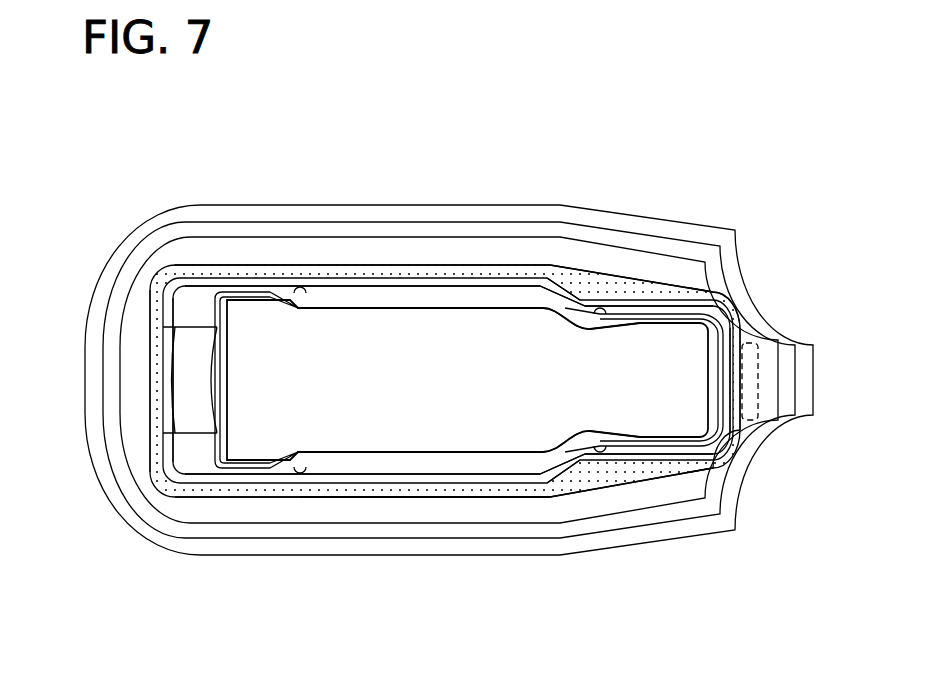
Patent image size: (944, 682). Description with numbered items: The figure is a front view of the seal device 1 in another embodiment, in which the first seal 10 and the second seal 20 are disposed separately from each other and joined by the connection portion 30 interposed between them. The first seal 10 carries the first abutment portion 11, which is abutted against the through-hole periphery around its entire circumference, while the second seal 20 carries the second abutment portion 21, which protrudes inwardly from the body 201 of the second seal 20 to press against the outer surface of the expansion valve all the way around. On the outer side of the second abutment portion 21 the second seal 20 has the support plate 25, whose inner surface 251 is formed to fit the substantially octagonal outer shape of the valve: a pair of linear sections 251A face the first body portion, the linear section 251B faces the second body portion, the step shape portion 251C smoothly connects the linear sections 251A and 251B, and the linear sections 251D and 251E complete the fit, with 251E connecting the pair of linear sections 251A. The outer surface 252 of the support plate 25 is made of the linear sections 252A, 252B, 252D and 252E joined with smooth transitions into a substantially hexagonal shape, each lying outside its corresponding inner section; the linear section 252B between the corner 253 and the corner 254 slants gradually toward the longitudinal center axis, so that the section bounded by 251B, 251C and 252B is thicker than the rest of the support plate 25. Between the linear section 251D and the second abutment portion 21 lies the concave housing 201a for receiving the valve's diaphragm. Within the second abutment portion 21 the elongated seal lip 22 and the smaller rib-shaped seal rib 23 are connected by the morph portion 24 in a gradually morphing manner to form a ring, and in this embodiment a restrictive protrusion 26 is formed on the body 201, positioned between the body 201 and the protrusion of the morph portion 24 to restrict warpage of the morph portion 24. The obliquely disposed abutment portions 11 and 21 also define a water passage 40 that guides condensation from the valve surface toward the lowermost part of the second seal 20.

The seal device 1 is at (103, 216).
The first seal 10 is at (470, 206).
The first abutment portion 11 is at (518, 232).
The second seal 20 is at (520, 288).
The second abutment portion 21 is at (217, 337).
The seal lip 22 is at (520, 465).
The seal rib 23 is at (700, 452).
The morph portion 24 is at (615, 443).
The support plate 25 is at (418, 492).
The restrictive protrusion 26 is at (600, 451).
The connection portion 30 is at (418, 238).
The water passage 40 is at (760, 378).
The body 201 is at (533, 282).
The concave housing 201a is at (193, 400).
The inner surface 251 is at (470, 480).
The linear section 251A is at (288, 283).
The linear section 251B is at (658, 300).
The step shape portion 251C is at (594, 300).
The linear section 251D is at (163, 382).
The linear section 251E is at (729, 342).
The outer surface 252 is at (368, 497).
The linear section 252A is at (383, 266).
The linear section 252B is at (673, 296).
The linear section 252D is at (150, 373).
The linear section 252E is at (741, 440).
The corner 253 is at (558, 300).
The corner 254 is at (734, 300).